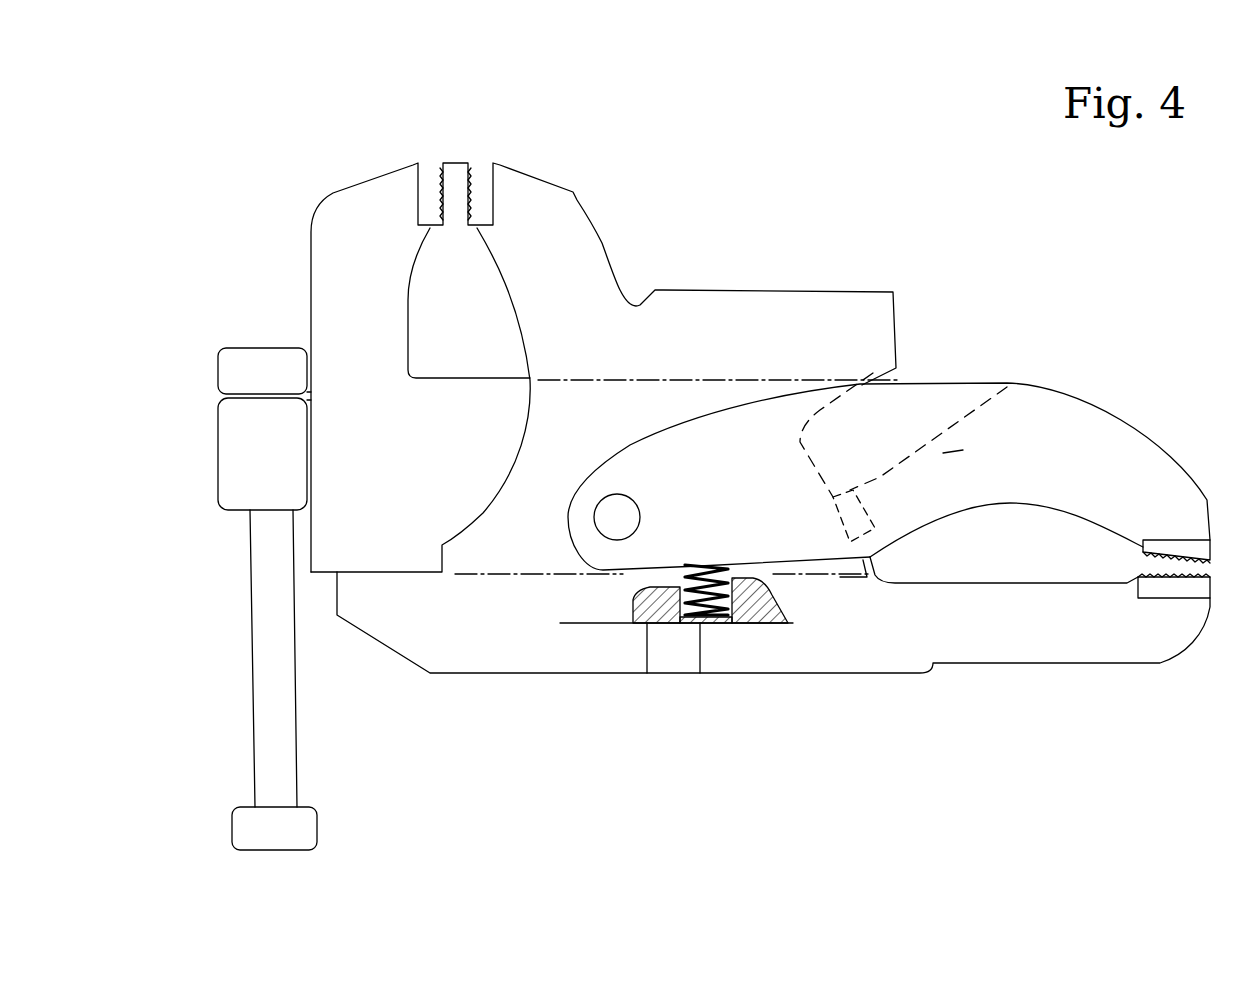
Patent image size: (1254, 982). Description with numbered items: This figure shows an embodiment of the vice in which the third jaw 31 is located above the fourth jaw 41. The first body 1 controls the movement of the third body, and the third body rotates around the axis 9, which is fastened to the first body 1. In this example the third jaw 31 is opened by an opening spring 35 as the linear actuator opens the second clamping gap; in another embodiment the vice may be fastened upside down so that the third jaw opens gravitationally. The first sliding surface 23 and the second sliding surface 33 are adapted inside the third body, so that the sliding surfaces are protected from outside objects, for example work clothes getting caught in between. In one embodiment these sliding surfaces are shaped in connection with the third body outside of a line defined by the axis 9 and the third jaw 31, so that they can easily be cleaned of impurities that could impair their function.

The first body 1 is at (553, 248).
The axis 9 is at (620, 510).
The first sliding surface 23 is at (915, 448).
The third jaw 31 is at (1177, 530).
The second sliding surface 33 is at (937, 460).
The opening spring 35 is at (723, 625).
The fourth jaw 41 is at (1185, 610).